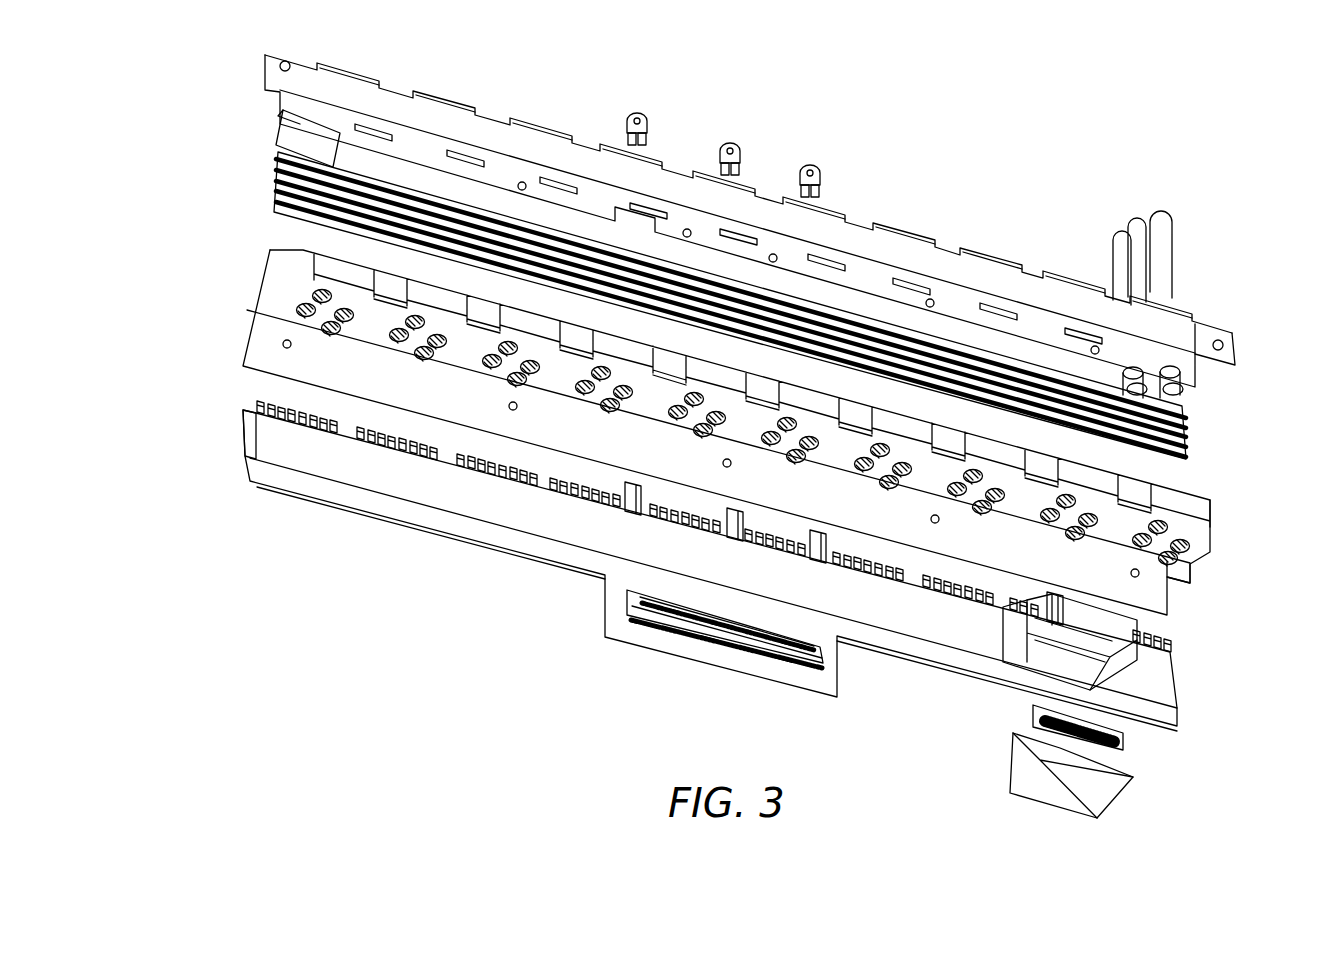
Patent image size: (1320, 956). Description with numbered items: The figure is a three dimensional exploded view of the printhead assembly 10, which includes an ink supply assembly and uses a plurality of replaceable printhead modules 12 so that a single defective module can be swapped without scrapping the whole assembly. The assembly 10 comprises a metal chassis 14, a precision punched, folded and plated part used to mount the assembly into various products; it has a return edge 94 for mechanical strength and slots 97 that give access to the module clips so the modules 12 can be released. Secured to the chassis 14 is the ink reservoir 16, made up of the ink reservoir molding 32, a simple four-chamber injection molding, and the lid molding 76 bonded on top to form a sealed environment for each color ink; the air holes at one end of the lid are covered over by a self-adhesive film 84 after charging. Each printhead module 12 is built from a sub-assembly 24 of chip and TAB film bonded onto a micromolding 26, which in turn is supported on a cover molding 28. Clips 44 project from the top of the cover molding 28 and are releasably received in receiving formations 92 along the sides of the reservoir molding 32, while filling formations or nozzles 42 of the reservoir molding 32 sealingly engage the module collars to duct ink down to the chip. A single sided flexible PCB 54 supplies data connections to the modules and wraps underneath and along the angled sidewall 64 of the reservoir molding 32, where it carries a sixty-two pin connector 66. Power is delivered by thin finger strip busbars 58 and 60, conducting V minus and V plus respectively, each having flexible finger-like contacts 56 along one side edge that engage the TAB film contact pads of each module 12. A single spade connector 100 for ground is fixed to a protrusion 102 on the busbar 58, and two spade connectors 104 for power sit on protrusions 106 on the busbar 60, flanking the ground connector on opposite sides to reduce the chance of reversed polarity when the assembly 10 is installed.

The printhead assembly 10 is at (1012, 162).
The printhead module 12 is at (1180, 620).
The chassis 14 is at (975, 252).
The ink reservoir 16 is at (1218, 442).
The sub-assembly 24 is at (1150, 802).
The micromolding 26 is at (1135, 732).
The cover molding 28 is at (1132, 658).
The ink reservoir molding 32 is at (1205, 522).
The filling formations or nozzles 42 is at (1198, 552).
The clips 44 is at (1048, 585).
The flexible PCB 54 is at (898, 640).
The contacts 56 is at (900, 572).
The busbar 58 is at (663, 567).
The busbar 60 is at (240, 435).
The angled sidewall 64 is at (1158, 578).
The 62-pin connector 66 is at (836, 668).
The lid molding 76 is at (1210, 410).
The self-adhesive film 84 is at (298, 140).
The receiving formations 92 is at (870, 410).
The return edge 94 is at (1205, 330).
The slots 97 is at (592, 136).
The spade connector 100 is at (736, 142).
The protrusion 102 is at (746, 507).
The spade connectors 104 is at (641, 112).
The protrusions 106 is at (638, 482).